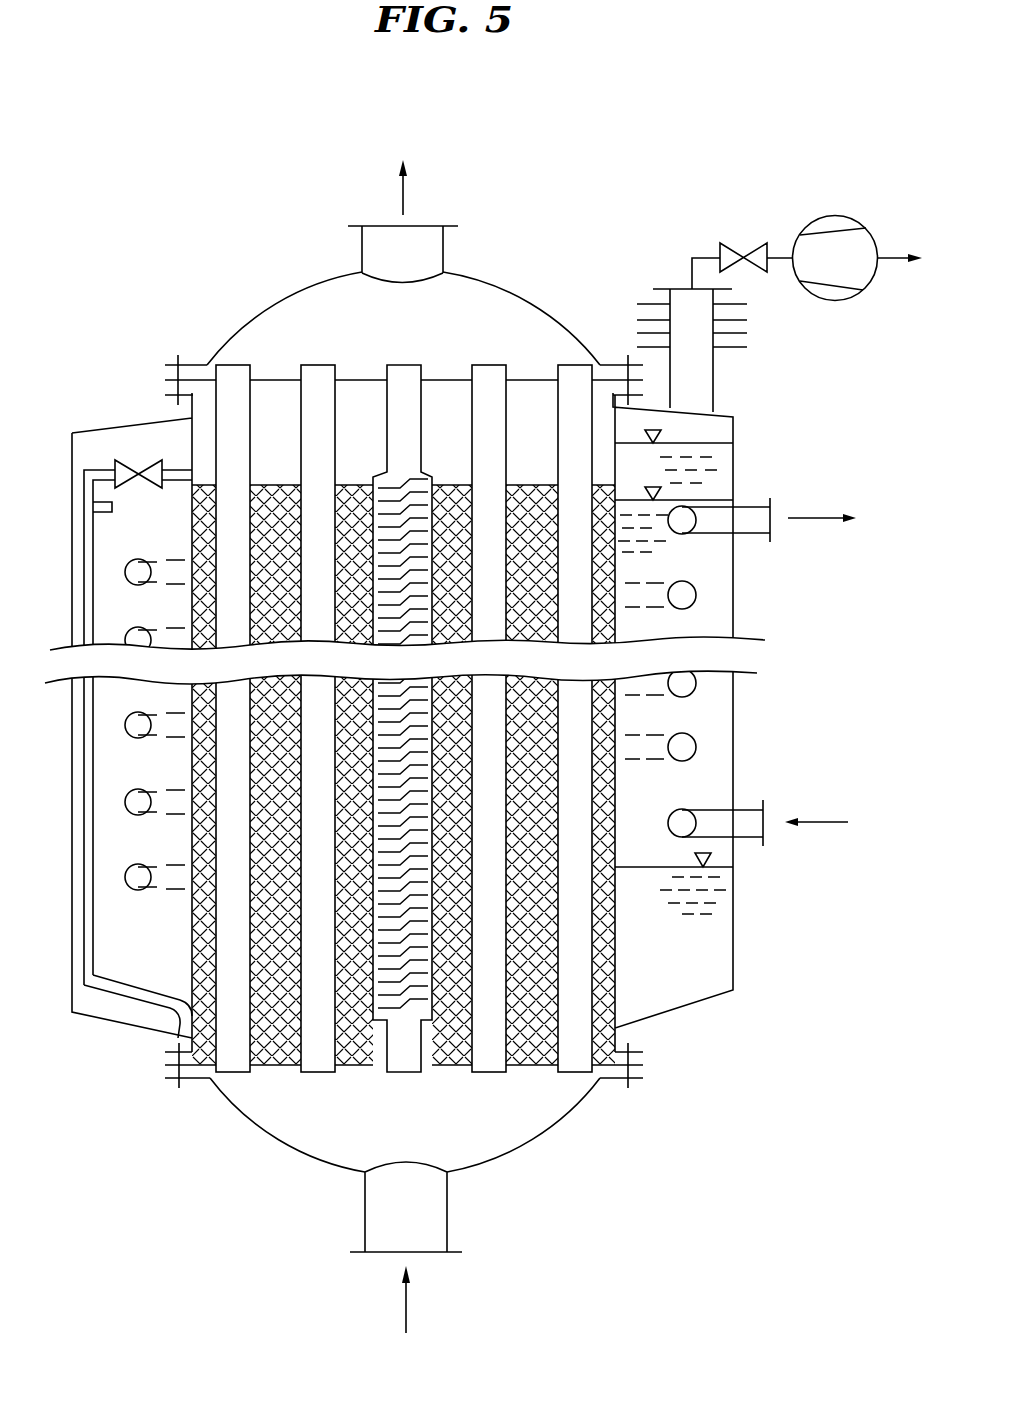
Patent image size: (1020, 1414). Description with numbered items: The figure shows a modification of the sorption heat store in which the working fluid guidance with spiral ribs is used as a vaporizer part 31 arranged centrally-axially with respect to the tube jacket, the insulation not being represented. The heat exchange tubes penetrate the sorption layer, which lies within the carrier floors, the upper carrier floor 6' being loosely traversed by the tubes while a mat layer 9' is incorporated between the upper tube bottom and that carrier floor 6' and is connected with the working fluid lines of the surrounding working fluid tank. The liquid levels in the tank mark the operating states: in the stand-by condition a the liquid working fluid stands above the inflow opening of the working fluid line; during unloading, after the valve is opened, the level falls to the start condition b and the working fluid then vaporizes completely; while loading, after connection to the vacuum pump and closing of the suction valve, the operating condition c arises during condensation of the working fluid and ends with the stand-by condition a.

The carrier floor 6' is at (365, 728).
The mat layer 9' is at (404, 718).
The vaporizer part 31 is at (407, 500).
The stand-by condition a is at (715, 443).
The start condition b is at (690, 500).
The operating condition c is at (720, 867).